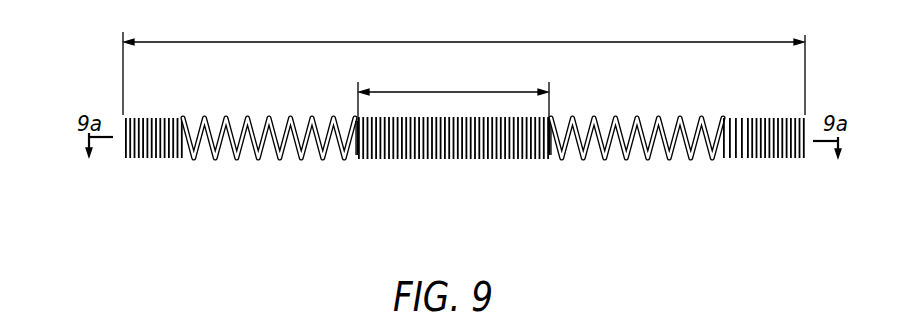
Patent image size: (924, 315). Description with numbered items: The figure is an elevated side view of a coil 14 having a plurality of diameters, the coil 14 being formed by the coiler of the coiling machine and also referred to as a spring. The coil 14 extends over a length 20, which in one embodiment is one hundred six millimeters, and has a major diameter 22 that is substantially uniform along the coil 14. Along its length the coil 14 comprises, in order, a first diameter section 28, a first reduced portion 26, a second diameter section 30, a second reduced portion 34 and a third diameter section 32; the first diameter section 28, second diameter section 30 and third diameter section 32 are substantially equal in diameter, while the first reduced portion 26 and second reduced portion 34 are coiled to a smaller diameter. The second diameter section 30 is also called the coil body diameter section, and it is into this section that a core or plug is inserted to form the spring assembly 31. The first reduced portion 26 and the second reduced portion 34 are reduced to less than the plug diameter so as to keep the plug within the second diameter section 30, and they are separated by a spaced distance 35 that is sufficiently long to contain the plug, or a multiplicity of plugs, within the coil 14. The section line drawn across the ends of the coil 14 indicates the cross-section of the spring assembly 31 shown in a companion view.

The coil 14 is at (454, 174).
The length 20 is at (276, 40).
The major diameter 22 is at (175, 175).
The first reduced portion 26 is at (355, 162).
The first diameter section 28 is at (257, 158).
The second diameter section 30 is at (398, 162).
The spring assembly 31 is at (282, 212).
The third diameter section 32 is at (680, 153).
The second reduced portion 34 is at (548, 168).
The spaced distance 35 is at (411, 90).